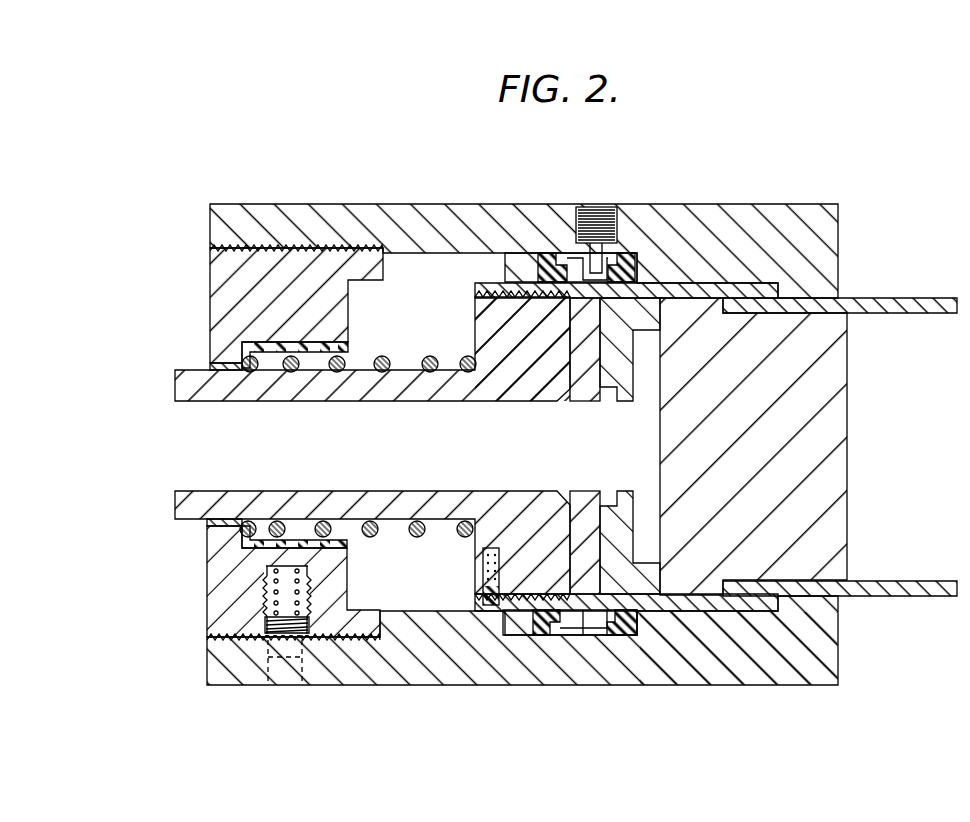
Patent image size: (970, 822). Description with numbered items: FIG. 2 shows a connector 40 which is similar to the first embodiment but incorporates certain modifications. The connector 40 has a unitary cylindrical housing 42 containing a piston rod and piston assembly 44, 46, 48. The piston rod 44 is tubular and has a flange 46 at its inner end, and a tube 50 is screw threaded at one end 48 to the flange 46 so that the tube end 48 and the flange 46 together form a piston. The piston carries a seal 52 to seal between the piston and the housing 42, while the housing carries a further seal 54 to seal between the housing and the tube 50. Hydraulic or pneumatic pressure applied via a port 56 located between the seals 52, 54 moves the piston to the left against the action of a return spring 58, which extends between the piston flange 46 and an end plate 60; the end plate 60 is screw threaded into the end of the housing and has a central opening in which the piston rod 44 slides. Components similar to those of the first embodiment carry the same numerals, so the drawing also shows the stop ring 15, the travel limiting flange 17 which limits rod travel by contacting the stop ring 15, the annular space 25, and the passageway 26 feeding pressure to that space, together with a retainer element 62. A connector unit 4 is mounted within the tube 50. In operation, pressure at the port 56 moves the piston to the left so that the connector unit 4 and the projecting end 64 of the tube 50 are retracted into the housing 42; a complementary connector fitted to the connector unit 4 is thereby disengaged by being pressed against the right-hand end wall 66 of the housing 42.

The connector unit 4 is at (848, 530).
The stop ring 15 is at (598, 632).
The travel limiting flange 17 is at (571, 632).
The annular space 25 is at (575, 632).
The passageway 26 is at (569, 256).
The connector 40 is at (551, 445).
The cylindrical housing 42 is at (388, 678).
The piston rod 44 is at (345, 395).
The flange 46 is at (486, 327).
The tube end 48 is at (503, 258).
The tube 50 is at (693, 600).
The seal 52 is at (548, 256).
The further seal 54 is at (629, 255).
The port 56 is at (604, 214).
The return spring 58 is at (384, 356).
The end plate 60 is at (214, 292).
The retainer 62 is at (216, 401).
The projecting end 64 is at (941, 302).
The right-hand end wall 66 is at (841, 236).